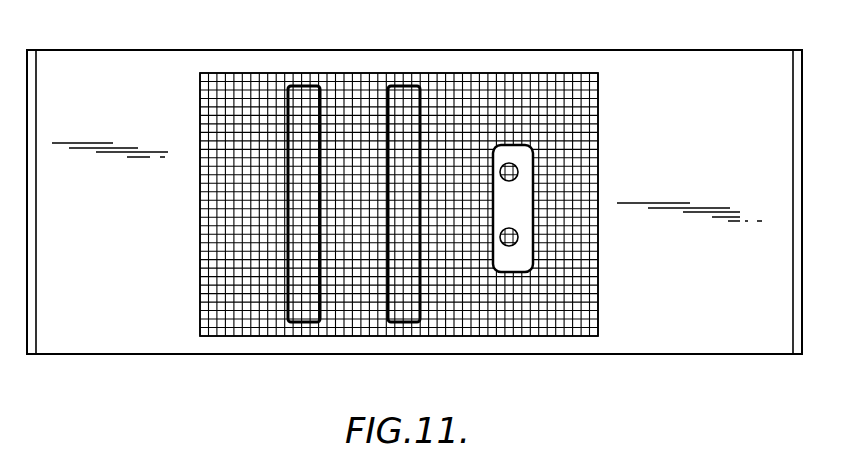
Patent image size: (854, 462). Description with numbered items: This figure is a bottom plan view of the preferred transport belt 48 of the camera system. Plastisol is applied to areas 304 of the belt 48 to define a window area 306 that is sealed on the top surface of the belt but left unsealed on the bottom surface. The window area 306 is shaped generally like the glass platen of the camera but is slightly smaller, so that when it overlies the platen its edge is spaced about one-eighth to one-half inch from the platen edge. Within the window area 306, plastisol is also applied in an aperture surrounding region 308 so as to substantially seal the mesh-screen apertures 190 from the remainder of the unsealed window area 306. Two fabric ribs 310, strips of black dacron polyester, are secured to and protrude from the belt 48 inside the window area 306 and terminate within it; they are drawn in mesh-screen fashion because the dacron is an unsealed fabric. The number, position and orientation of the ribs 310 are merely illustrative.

The belt 48 is at (545, 370).
The mesh-screen apertures 190 is at (516, 178).
The areas 304 is at (672, 342).
The window area 306 is at (495, 80).
The aperture surrounding region 308 is at (523, 263).
The fabric ribs 310 is at (307, 88).